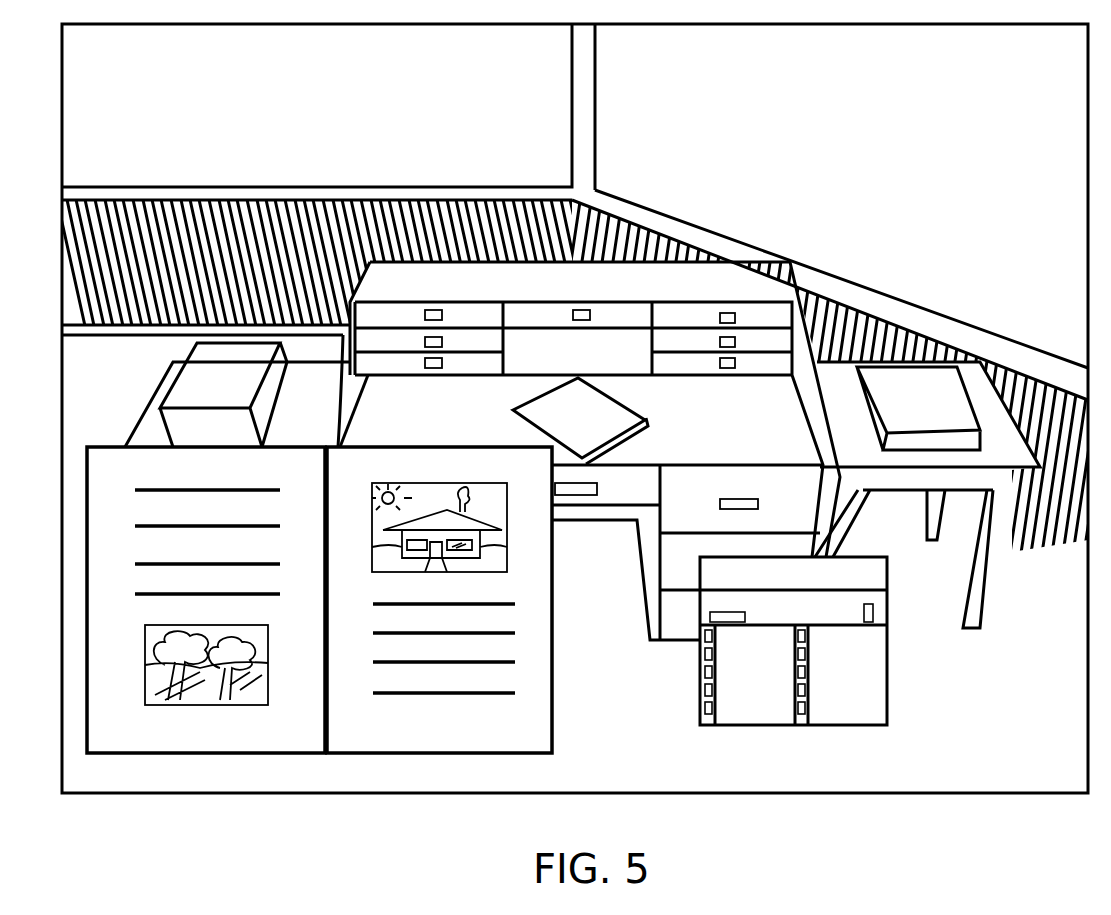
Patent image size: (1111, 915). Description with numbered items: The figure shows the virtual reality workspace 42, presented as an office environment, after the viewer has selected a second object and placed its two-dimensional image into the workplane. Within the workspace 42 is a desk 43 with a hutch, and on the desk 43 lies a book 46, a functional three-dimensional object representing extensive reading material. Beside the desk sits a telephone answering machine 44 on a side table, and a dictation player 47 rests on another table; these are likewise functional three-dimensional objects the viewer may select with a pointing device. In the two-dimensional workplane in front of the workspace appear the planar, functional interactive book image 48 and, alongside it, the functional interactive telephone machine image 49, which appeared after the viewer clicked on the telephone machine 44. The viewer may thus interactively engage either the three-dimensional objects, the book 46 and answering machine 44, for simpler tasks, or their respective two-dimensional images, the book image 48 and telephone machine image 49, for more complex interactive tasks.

The workspace 42 is at (927, 327).
The desk 43 is at (398, 277).
The telephone answering machine 44 is at (925, 402).
The book 46 is at (583, 407).
The dictation player 47 is at (232, 357).
The two-dimensional image of the book 48 is at (237, 718).
The two-dimensional image of the telephone machine 49 is at (830, 675).